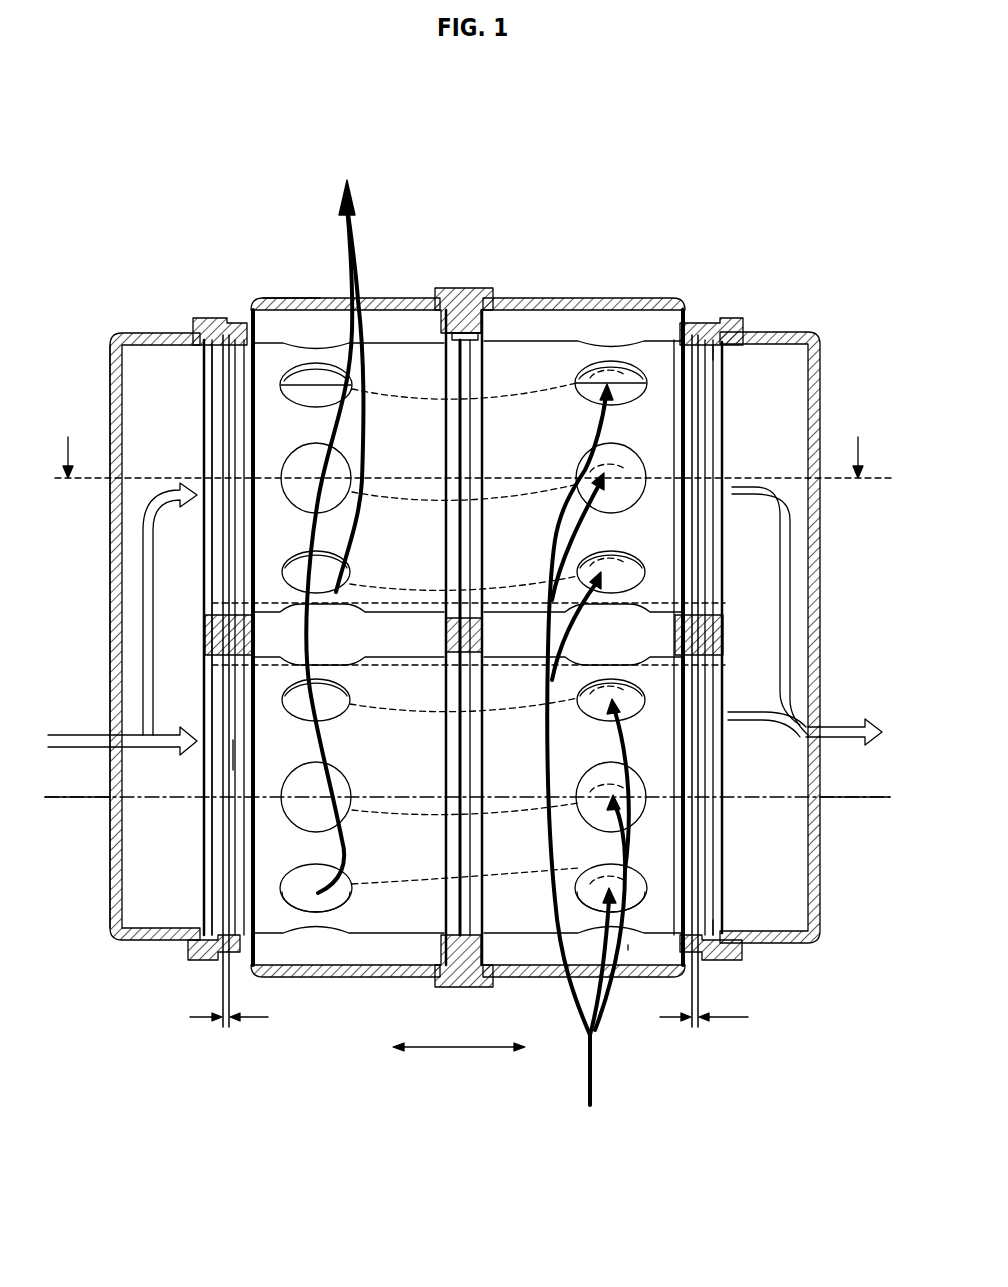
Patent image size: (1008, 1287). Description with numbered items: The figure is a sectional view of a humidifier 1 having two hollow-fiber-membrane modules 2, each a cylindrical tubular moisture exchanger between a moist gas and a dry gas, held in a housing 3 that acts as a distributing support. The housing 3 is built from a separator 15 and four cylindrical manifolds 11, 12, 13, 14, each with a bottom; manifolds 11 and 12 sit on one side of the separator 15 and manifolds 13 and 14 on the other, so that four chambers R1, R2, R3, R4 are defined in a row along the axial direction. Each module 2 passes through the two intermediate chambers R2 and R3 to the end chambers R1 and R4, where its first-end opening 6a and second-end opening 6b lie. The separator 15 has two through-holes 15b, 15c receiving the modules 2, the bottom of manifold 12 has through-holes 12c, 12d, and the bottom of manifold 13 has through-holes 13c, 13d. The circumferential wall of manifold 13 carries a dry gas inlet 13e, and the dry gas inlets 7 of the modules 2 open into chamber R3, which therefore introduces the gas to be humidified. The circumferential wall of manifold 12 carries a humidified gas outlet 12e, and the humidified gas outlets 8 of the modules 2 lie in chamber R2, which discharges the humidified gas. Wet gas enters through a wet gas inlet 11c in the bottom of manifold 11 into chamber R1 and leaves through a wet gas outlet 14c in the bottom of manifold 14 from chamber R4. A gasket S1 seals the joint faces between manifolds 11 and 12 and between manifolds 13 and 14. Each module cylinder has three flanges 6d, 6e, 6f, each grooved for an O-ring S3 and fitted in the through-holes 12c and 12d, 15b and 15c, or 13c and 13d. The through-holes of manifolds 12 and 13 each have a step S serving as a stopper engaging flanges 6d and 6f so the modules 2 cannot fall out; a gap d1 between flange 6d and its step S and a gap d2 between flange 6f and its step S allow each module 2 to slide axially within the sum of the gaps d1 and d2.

The humidifier 1 is at (578, 183).
The hollow-fiber-membrane module 2 is at (255, 541).
The housing 3 is at (110, 330).
The first-end opening 6a is at (204, 760).
The second-end opening 6b is at (726, 780).
The flange 6d is at (240, 758).
The flange 6e is at (472, 782).
The flange 6f is at (704, 818).
The dry gas inlet 7 is at (594, 716).
The humidified gas outlet 8 is at (338, 710).
The manifold 11 is at (150, 325).
The wet gas inlet 11c is at (112, 805).
The manifold 12 is at (328, 294).
The through-hole 12c is at (212, 358).
The through-hole 12d is at (210, 918).
The humidified gas outlet 12e is at (300, 298).
The manifold 13 is at (582, 290).
The through-hole 13c is at (714, 348).
The through-hole 13d is at (718, 920).
The dry gas inlet 13e is at (630, 948).
The manifold 14 is at (790, 325).
The wet gas outlet 14c is at (822, 805).
The separator 15 is at (468, 282).
The through-hole 15b is at (460, 345).
The through-hole 15c is at (483, 937).
The step S is at (227, 355).
The gasket S1 is at (207, 316).
The O-ring S3 is at (236, 322).
The chamber R1 is at (184, 658).
The chamber R2 is at (338, 660).
The chamber R3 is at (622, 660).
The chamber R4 is at (758, 602).
The gap d1 is at (231, 1005).
The gap d2 is at (704, 1005).